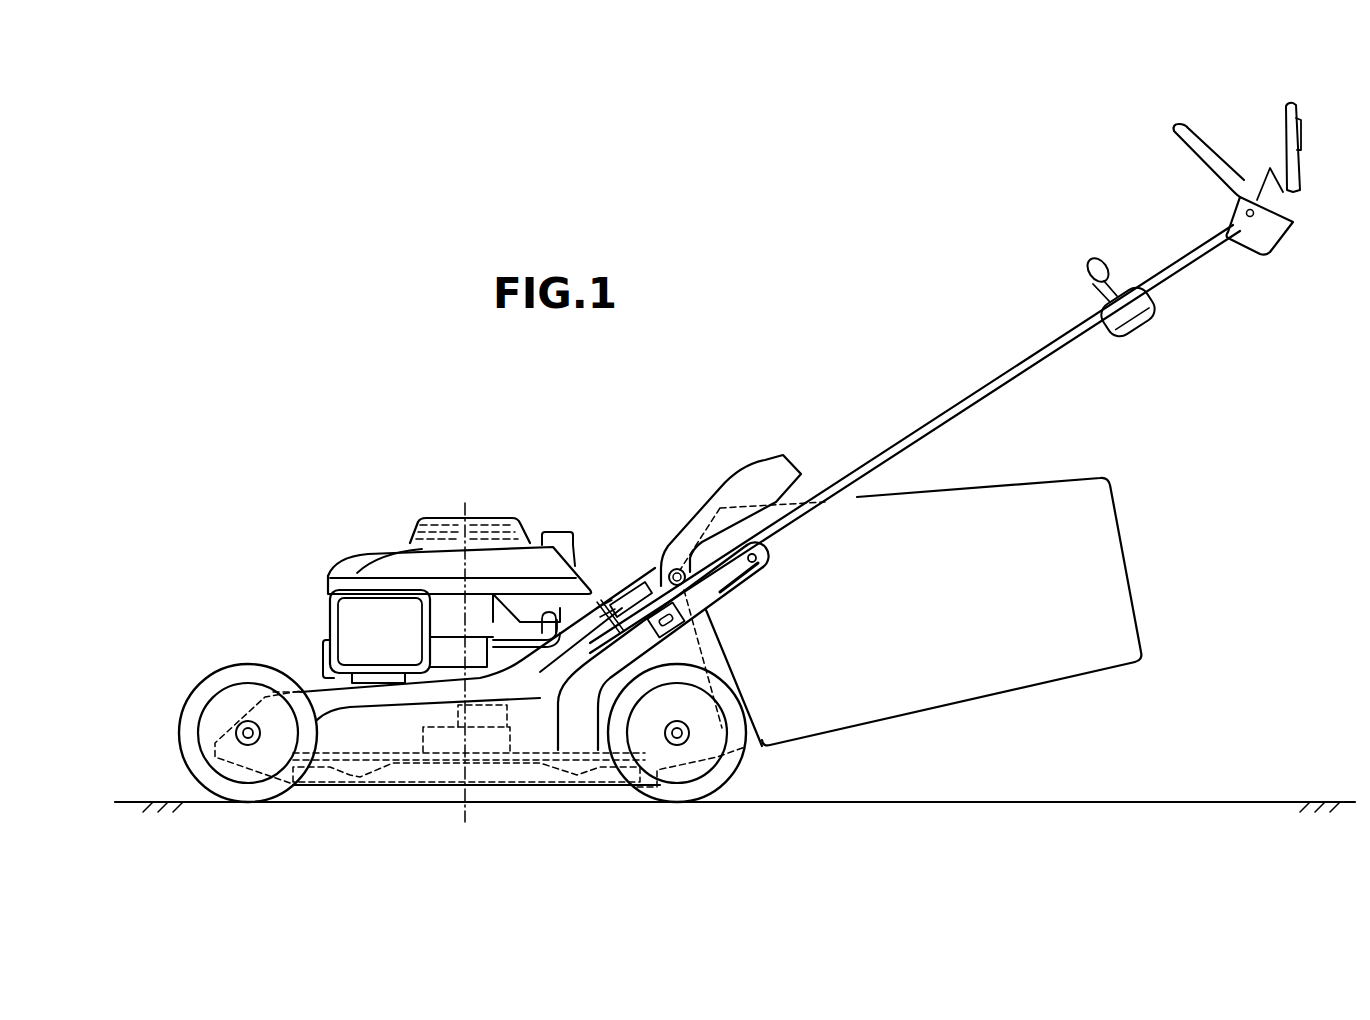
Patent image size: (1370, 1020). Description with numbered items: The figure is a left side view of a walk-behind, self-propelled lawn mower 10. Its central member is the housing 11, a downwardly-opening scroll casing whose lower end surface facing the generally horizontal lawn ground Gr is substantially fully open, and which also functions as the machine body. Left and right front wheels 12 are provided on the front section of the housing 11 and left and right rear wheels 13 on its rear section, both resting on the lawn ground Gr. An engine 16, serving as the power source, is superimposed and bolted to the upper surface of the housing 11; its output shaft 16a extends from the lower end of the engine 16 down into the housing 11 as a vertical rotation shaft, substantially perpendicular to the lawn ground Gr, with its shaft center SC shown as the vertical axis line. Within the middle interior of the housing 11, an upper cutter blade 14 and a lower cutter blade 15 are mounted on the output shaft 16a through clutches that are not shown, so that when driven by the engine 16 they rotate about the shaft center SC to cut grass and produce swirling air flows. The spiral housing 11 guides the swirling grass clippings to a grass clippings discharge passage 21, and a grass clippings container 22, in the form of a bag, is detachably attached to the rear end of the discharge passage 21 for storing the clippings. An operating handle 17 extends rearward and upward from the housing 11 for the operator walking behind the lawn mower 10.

The lawn mower 10 is at (857, 218).
The housing 11 is at (322, 703).
The front wheels 12 is at (247, 790).
The rear wheels 13 is at (684, 790).
The upper cutter blade 14 is at (357, 757).
The lower cutter blade 15 is at (389, 772).
The engine 16 is at (390, 568).
The output shaft 16a is at (478, 710).
The operating handle 17 is at (1030, 357).
The grass clippings discharge passage 21 is at (704, 652).
The grass clippings container 22 is at (1100, 578).
The shaft center SC is at (470, 509).
The lawn ground Gr is at (1090, 790).